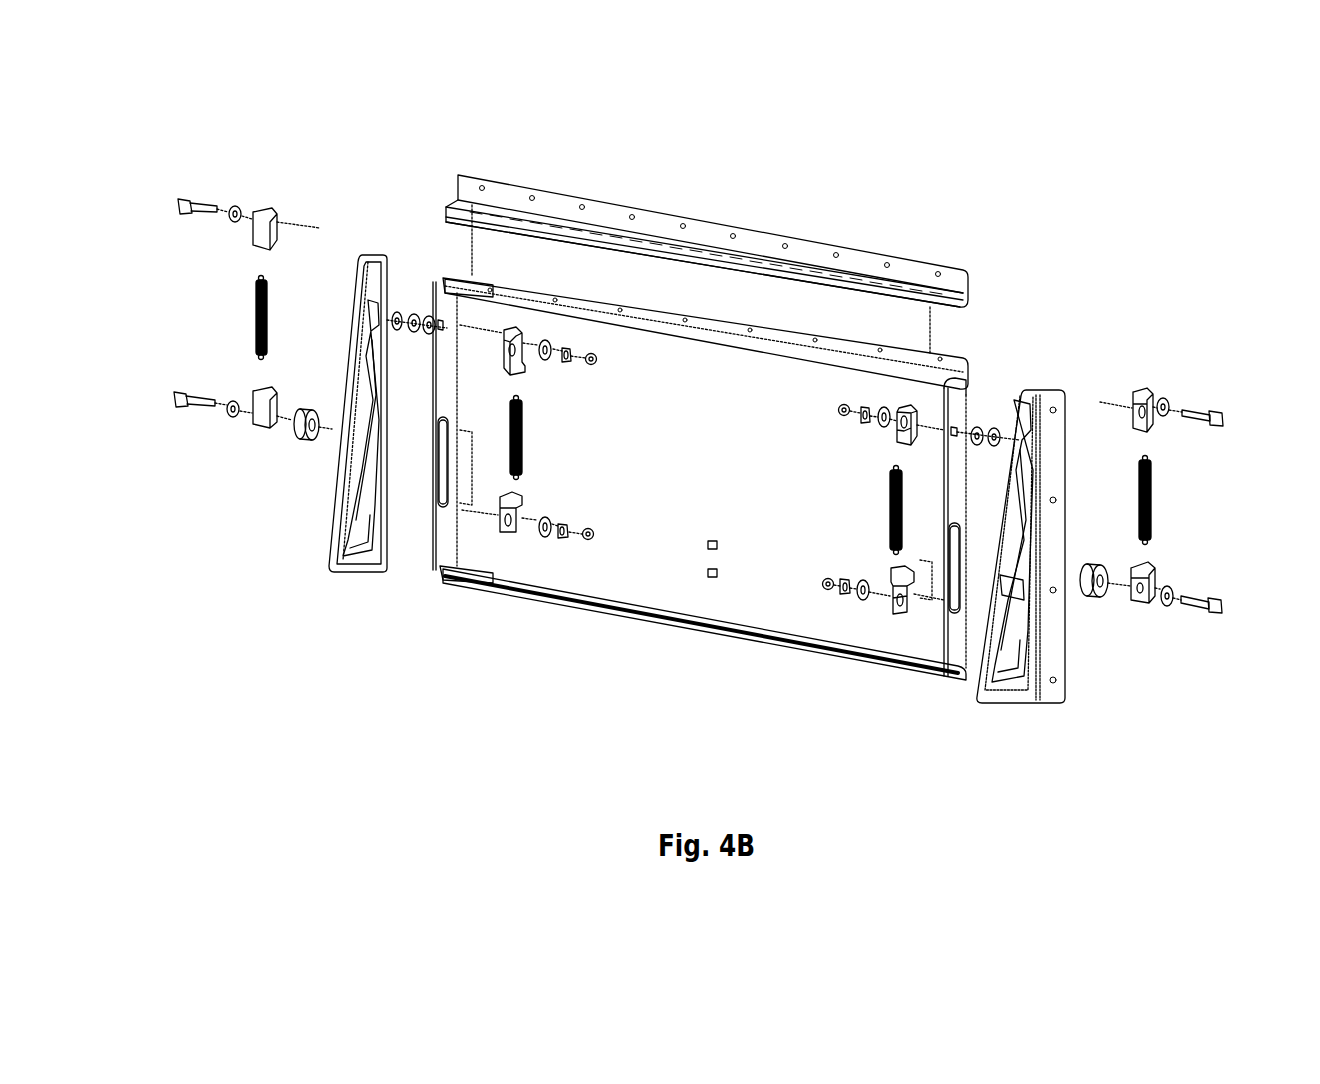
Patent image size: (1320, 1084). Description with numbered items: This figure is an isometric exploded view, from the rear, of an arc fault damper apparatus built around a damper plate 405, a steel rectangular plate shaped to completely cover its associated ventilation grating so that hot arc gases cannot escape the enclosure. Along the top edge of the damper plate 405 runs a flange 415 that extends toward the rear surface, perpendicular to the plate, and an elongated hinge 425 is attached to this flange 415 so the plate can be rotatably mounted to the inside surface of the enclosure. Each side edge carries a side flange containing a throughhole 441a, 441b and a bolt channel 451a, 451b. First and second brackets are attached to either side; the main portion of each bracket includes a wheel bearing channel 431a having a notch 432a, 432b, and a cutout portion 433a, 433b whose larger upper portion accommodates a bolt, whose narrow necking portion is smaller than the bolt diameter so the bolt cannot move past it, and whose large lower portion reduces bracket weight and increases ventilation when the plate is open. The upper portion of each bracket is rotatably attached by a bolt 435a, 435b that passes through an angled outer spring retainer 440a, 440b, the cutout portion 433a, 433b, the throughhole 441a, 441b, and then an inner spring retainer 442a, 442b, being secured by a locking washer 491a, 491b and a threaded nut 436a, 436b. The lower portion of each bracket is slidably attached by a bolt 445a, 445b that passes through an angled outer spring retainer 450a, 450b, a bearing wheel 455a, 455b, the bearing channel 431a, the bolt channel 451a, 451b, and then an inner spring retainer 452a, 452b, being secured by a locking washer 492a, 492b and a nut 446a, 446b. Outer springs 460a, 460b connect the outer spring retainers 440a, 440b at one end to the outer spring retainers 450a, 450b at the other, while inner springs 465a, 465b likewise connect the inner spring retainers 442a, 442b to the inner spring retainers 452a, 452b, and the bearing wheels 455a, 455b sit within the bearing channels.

The damper plate 405 is at (731, 459).
The flange 415 is at (646, 322).
The elongated hinge 425 is at (650, 212).
The wheel bearing channel 431a is at (1010, 588).
The notch 432a is at (992, 616).
The notch 432b is at (345, 482).
The cutout portion 433a is at (1021, 436).
The cutout portion 433b is at (372, 312).
The bolt 435a is at (1218, 409).
The bolt 435b is at (180, 199).
The nut 436a is at (838, 409).
The nut 436b is at (598, 360).
The angled outer spring retainer 440a is at (1140, 390).
The angled outer spring retainer 440b is at (263, 210).
The throughhole 441a is at (954, 428).
The throughhole 441b is at (442, 318).
The inner spring retainer 442a is at (903, 405).
The inner spring retainer 442b is at (512, 330).
The bolt 445a is at (1213, 599).
The bolt 445b is at (177, 406).
The nut 446a is at (822, 584).
The nut 446b is at (592, 539).
The angled outer spring retainer 450a is at (1138, 601).
The angled outer spring retainer 450b is at (267, 430).
The bolt channel 451a is at (953, 594).
The bolt channel 451b is at (443, 488).
The inner spring retainer 452a is at (895, 608).
The inner spring retainer 452b is at (507, 534).
The bearing wheel 455a is at (1100, 598).
The bearing wheel 455b is at (294, 443).
The outer spring 460a is at (1155, 492).
The outer spring 460b is at (249, 310).
The inner spring 465a is at (884, 497).
The inner spring 465b is at (524, 438).
The locking washer 491a is at (865, 406).
The locking washer 491b is at (566, 360).
The locking washer 492a is at (842, 580).
The locking washer 492b is at (565, 524).